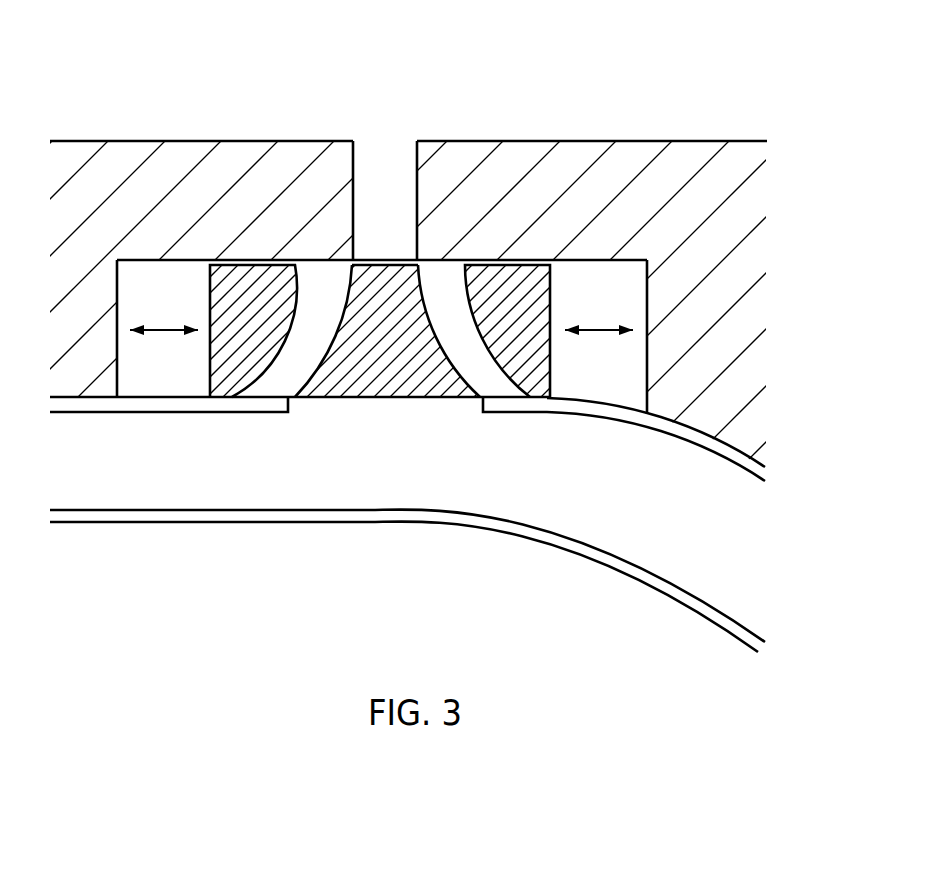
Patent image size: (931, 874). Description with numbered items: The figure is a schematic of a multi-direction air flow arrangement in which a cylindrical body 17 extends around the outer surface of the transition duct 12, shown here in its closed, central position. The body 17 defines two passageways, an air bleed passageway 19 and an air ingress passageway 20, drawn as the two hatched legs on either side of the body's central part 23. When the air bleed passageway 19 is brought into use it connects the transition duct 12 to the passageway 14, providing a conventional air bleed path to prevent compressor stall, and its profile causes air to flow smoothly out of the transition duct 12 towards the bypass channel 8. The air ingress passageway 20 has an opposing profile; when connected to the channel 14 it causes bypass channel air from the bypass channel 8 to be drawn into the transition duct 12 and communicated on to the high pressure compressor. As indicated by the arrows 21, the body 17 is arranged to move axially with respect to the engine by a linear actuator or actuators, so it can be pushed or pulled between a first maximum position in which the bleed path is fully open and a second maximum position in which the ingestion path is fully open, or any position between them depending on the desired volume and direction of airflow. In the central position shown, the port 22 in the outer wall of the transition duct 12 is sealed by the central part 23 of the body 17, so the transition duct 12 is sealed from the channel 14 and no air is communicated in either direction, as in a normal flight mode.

The bypass channel 8 is at (677, 78).
The transition duct 12 is at (710, 477).
The passageway 14 is at (386, 150).
The cylindrical body 17 is at (444, 281).
The air bleed passageway 19 is at (275, 392).
The air ingress passageway 20 is at (497, 388).
The arrows 21 is at (165, 332).
The port 22 is at (382, 275).
The central part 23 is at (380, 287).